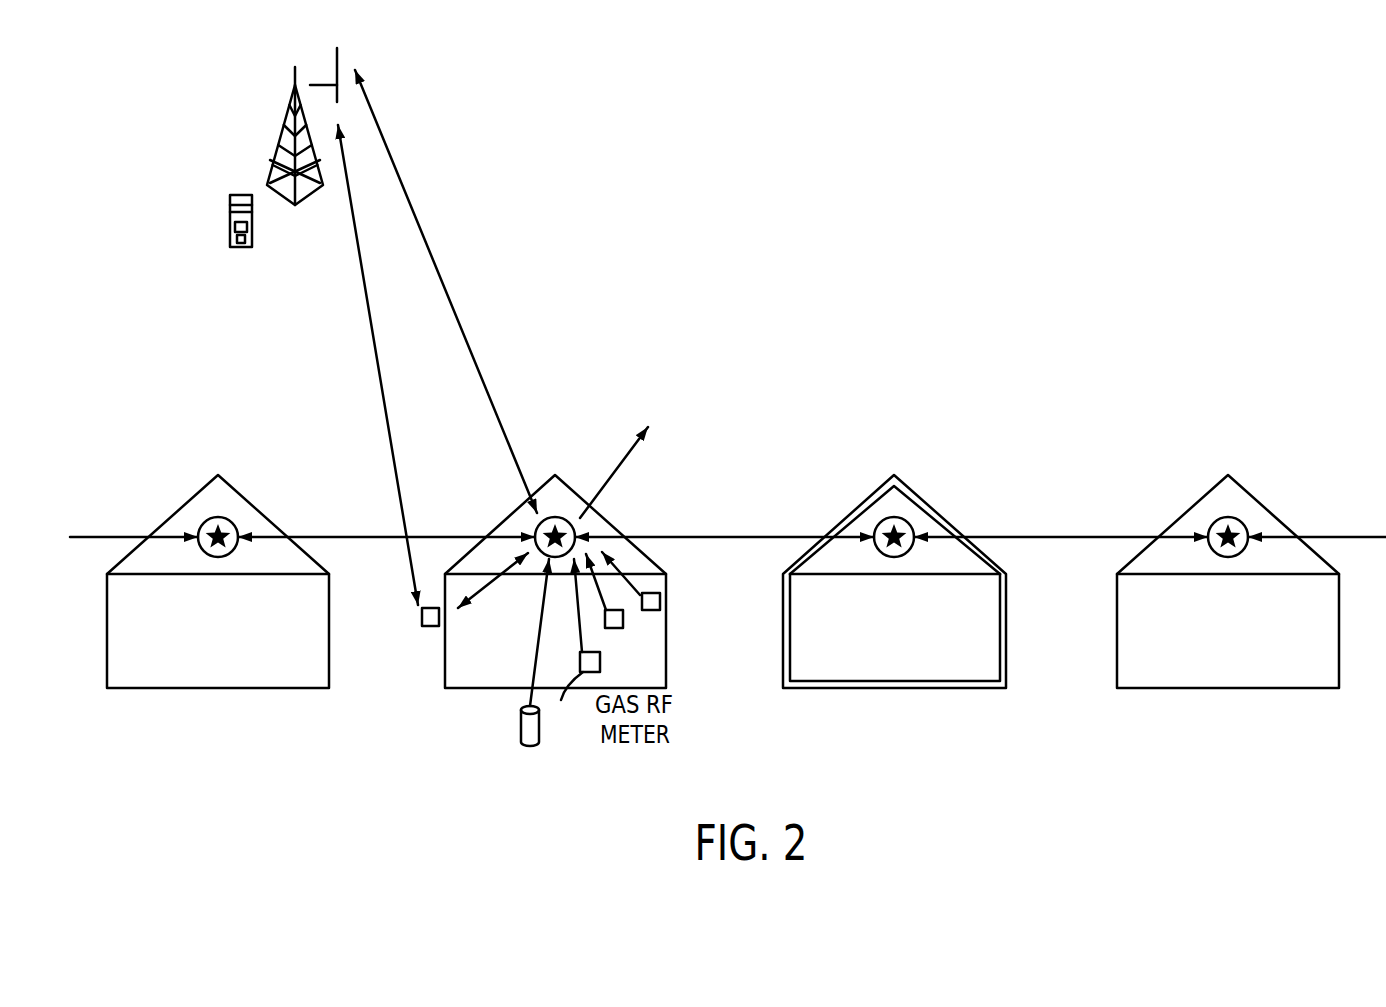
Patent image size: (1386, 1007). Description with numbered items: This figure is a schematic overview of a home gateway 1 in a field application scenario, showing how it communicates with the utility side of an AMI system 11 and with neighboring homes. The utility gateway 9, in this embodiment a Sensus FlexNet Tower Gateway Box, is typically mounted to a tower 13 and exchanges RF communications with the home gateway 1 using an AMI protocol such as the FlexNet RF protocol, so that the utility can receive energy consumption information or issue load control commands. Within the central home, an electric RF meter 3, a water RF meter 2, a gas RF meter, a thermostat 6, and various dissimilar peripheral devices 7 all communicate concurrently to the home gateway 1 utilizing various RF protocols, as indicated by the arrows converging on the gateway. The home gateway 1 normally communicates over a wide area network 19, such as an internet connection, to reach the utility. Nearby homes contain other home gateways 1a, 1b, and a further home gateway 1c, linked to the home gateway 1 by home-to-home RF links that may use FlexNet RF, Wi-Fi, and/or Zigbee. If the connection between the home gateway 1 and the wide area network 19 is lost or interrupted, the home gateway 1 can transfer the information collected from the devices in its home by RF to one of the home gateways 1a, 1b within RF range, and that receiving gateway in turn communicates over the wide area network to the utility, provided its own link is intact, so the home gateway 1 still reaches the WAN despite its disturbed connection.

The home gateway 1 is at (580, 518).
The home gateway 1a is at (232, 522).
The home gateway 1b is at (910, 522).
The house with network node 1c is at (1243, 522).
The water RF meter 2 is at (540, 718).
The electric RF meter 3 is at (421, 617).
The thermostat 6 is at (613, 628).
The peripheral device 7 is at (661, 602).
The utility gateway 9 is at (228, 223).
The AMI system 11 is at (1003, 632).
The tower 13 is at (283, 134).
The wide area network (WAN) 19 is at (684, 390).